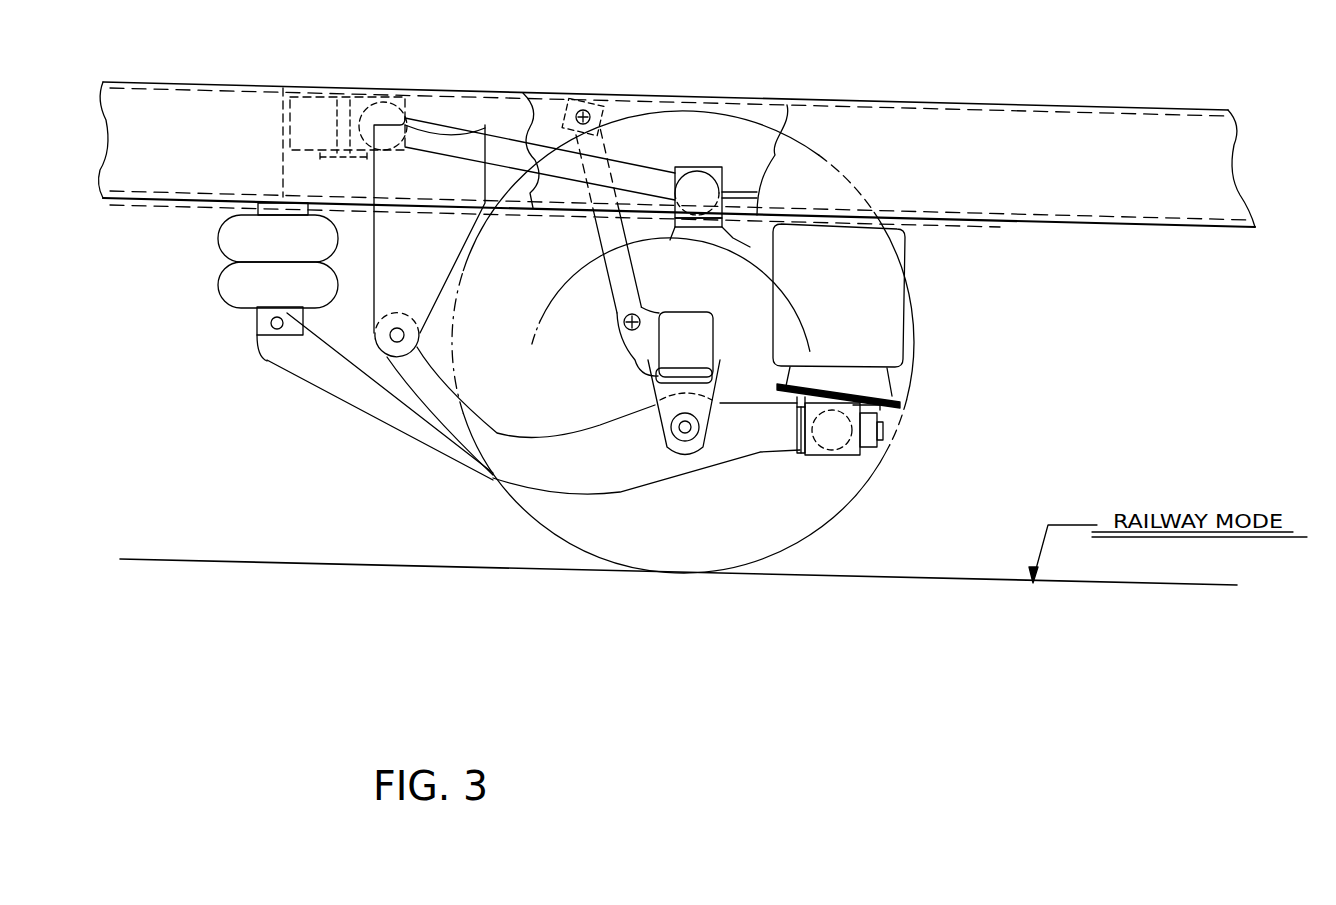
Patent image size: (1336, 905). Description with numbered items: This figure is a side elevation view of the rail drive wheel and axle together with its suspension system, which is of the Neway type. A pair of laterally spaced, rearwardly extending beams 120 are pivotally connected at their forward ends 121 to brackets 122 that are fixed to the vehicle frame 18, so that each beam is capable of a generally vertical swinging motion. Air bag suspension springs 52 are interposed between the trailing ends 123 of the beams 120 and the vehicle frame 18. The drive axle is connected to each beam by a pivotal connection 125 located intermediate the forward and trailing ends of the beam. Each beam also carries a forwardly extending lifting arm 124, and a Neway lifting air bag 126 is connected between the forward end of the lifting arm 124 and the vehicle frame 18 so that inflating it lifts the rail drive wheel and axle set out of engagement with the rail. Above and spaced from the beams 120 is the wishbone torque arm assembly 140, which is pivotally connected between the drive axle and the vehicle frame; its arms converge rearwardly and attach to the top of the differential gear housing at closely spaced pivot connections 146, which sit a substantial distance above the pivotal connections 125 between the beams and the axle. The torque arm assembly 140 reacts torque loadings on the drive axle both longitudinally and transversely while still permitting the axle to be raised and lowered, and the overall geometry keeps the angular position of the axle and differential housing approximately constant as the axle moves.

The vehicle frame 18 is at (219, 110).
The torque arm assembly 140 is at (625, 150).
The pivot connections 146 is at (757, 192).
The lifting air bag 126 is at (258, 238).
The brackets 122 is at (420, 258).
The forward ends 121 is at (375, 343).
The lifting arm 124 is at (296, 347).
The beams 120 is at (518, 455).
The pivotal connection 125 is at (668, 446).
The air bag suspension springs 52 is at (875, 298).
The trailing ends 123 is at (832, 452).